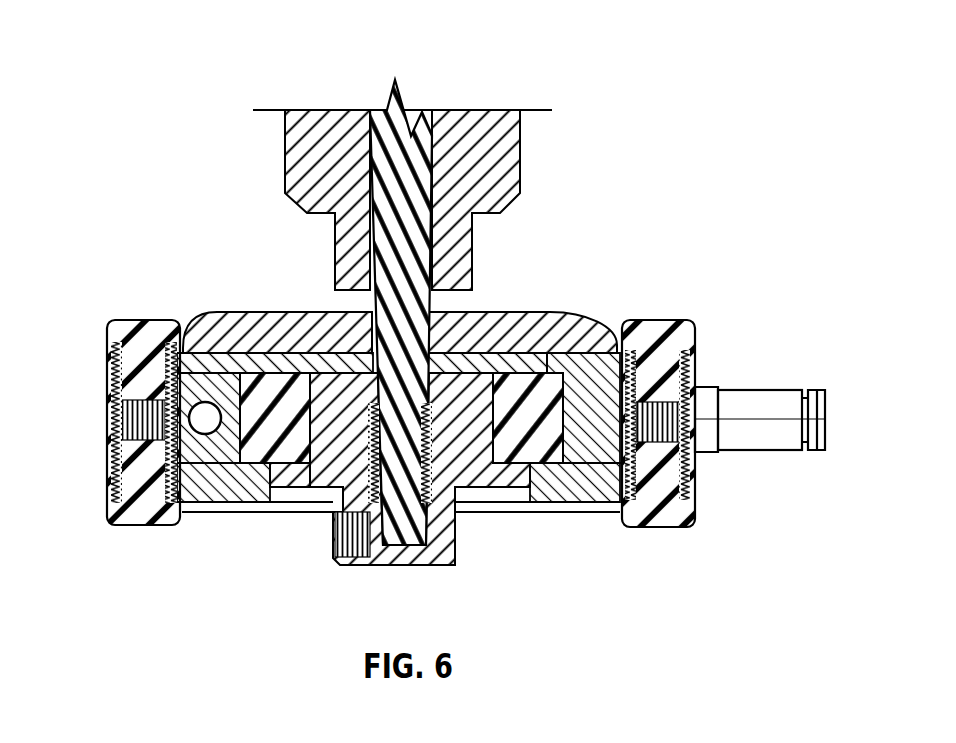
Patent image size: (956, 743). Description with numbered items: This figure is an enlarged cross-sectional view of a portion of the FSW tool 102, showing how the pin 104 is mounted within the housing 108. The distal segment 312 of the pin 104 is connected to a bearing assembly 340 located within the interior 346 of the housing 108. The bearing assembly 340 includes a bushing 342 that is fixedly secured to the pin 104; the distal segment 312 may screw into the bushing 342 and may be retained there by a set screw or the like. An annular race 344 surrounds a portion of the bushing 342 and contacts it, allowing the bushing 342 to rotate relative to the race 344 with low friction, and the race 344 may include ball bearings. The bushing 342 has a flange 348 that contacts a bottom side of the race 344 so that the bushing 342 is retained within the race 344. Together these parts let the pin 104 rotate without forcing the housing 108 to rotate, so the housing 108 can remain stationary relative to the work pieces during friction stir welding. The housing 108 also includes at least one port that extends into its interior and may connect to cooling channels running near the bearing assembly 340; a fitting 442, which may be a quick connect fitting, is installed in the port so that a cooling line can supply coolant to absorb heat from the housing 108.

The FSW tool 102 is at (188, 148).
The pin 104 is at (390, 168).
The housing 108 is at (110, 347).
The distal segment 312 is at (392, 465).
The bearing assembly 340 is at (234, 388).
The bushing 342 is at (452, 453).
The race 344 is at (255, 460).
The interior 346 is at (536, 374).
The flange 348 is at (300, 477).
The fitting 442 is at (762, 432).